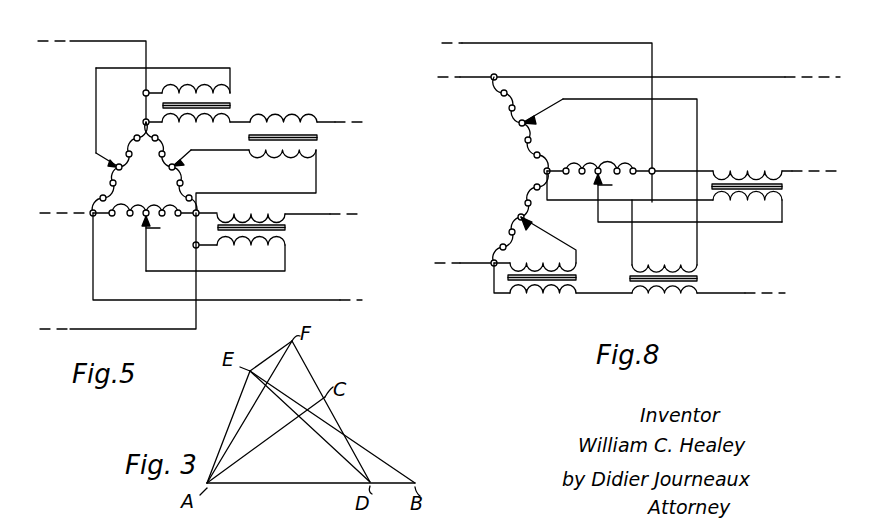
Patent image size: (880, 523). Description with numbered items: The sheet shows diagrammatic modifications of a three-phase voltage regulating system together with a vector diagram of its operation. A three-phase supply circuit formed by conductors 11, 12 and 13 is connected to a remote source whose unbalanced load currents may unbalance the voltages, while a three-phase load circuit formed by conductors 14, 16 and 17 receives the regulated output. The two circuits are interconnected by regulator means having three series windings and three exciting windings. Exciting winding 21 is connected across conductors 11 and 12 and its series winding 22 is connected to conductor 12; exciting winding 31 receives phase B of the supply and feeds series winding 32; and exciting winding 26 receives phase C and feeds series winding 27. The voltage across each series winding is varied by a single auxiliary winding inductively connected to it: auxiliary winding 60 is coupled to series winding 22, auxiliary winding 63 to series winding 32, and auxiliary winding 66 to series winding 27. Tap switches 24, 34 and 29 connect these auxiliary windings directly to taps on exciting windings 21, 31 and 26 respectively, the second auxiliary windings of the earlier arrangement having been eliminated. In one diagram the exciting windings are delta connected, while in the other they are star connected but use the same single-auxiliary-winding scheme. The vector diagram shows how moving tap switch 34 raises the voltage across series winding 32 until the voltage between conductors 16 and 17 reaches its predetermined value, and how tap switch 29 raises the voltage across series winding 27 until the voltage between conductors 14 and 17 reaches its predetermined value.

In FIG. 5, the supply circuit conductor 11 is at (83, 219).
In FIG. 8, the supply circuit conductor 11 is at (487, 77).
In FIG. 5, the supply circuit conductor 12 is at (104, 329).
In FIG. 8, the supply circuit conductor 12 is at (498, 43).
In FIG. 5, the supply circuit conductor 13 is at (98, 41).
In FIG. 8, the supply circuit conductor 13 is at (492, 263).
In FIG. 5, the load circuit conductor 14 is at (322, 299).
In FIG. 8, the load circuit conductor 14 is at (770, 72).
In FIG. 5, the load circuit conductor 16 is at (330, 213).
In FIG. 8, the load circuit conductor 16 is at (793, 170).
In FIG. 5, the load circuit conductor 17 is at (338, 122).
In FIG. 8, the load circuit conductor 17 is at (740, 293).
In FIG. 5, the exciting winding 21 is at (155, 225).
In FIG. 8, the exciting winding 21 is at (596, 167).
In FIG. 5, the series winding 22 is at (273, 208).
In FIG. 8, the series winding 22 is at (752, 161).
In FIG. 5, the tap switch 24 is at (163, 240).
In FIG. 8, the tap switch 24 is at (688, 195).
In FIG. 5, the exciting winding 26 is at (130, 158).
In FIG. 8, the exciting winding 26 is at (521, 218).
In FIG. 5, the series winding 27 is at (196, 132).
In FIG. 8, the series winding 27 is at (530, 295).
In FIG. 5, the tap switch 29 is at (112, 168).
In FIG. 8, the tap switch 29 is at (526, 228).
In FIG. 5, the exciting winding 31 is at (172, 180).
In FIG. 8, the exciting winding 31 is at (527, 158).
In FIG. 5, the series winding 32 is at (292, 108).
In FIG. 8, the series winding 32 is at (664, 294).
In FIG. 5, the tap switch 34 is at (177, 169).
In FIG. 8, the tap switch 34 is at (530, 126).
In FIG. 5, the first auxiliary winding 60 is at (215, 254).
In FIG. 8, the first auxiliary winding 60 is at (740, 202).
In FIG. 5, the auxiliary winding 63 is at (253, 181).
In FIG. 8, the auxiliary winding 63 is at (664, 268).
In FIG. 5, the auxiliary winding 66 is at (163, 110).
In FIG. 8, the auxiliary winding 66 is at (572, 264).